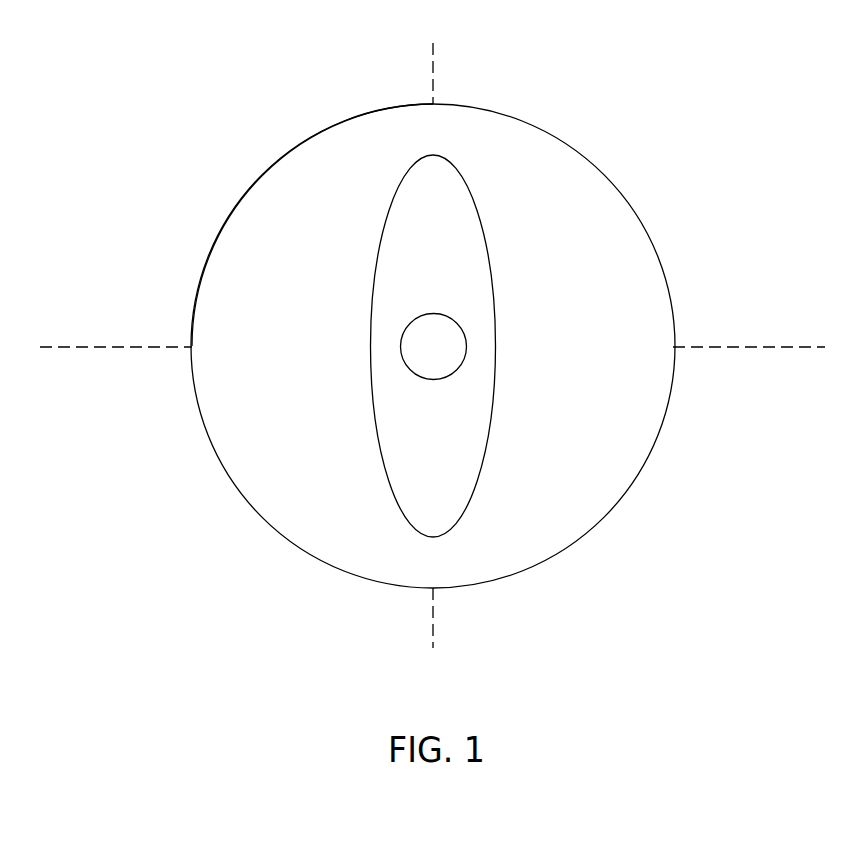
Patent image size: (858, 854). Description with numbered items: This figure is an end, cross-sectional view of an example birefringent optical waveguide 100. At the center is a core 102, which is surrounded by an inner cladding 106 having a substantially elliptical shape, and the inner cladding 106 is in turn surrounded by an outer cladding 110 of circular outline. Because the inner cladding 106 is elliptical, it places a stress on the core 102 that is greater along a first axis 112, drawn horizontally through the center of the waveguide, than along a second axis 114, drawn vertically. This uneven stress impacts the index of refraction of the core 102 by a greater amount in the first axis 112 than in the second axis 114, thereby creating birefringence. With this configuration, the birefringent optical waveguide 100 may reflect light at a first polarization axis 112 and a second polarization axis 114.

The birefringent optical waveguide 100 is at (676, 98).
The core 102 is at (443, 343).
The inner cladding 106 is at (490, 431).
The outer cladding 110 is at (203, 422).
The first axis 112 is at (792, 347).
The second axis 114 is at (433, 628).